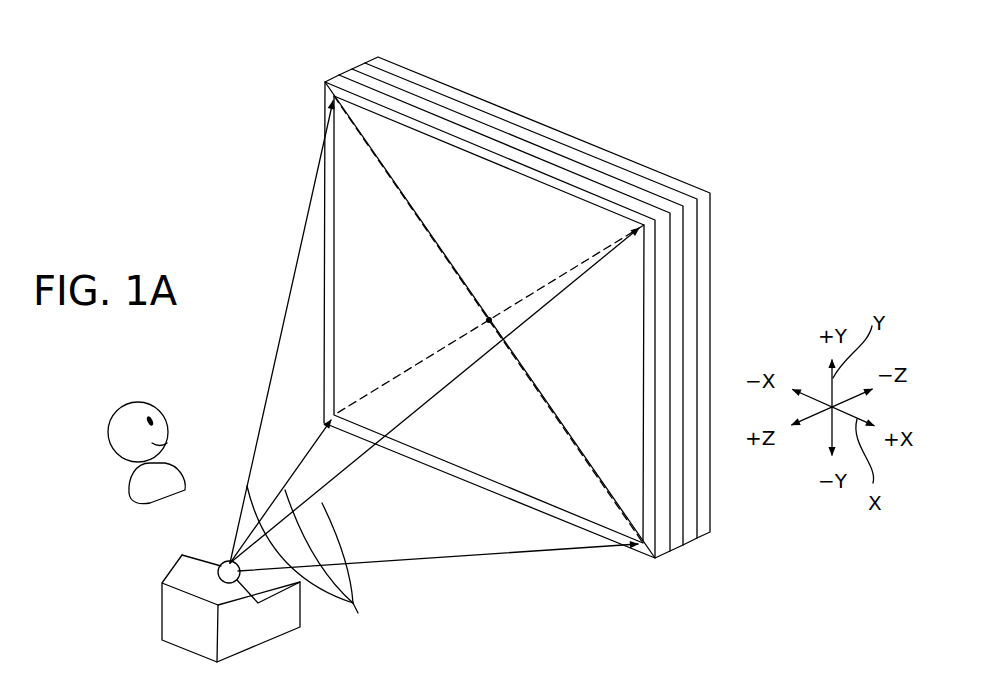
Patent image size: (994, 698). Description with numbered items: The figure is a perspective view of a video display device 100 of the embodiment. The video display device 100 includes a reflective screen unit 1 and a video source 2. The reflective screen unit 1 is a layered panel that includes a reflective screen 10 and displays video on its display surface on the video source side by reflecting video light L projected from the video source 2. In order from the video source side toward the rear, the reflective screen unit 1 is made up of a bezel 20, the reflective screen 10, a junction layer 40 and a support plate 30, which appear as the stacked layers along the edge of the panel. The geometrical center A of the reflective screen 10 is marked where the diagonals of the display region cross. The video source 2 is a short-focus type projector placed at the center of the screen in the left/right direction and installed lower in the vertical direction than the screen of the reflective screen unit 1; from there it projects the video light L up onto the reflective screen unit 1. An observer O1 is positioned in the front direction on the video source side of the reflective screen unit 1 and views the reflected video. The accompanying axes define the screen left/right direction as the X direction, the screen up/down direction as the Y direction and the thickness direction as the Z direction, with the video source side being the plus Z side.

The reflective screen unit 1 is at (489, 80).
The video display device 100 is at (667, 135).
The reflective screen 10 is at (679, 549).
The bezel 20 is at (665, 552).
The support plate 30 is at (705, 535).
The junction layer 40 is at (692, 542).
The video source 2 is at (190, 641).
The geometrical center A is at (489, 318).
The video light L is at (367, 563).
The observer O1 is at (120, 416).